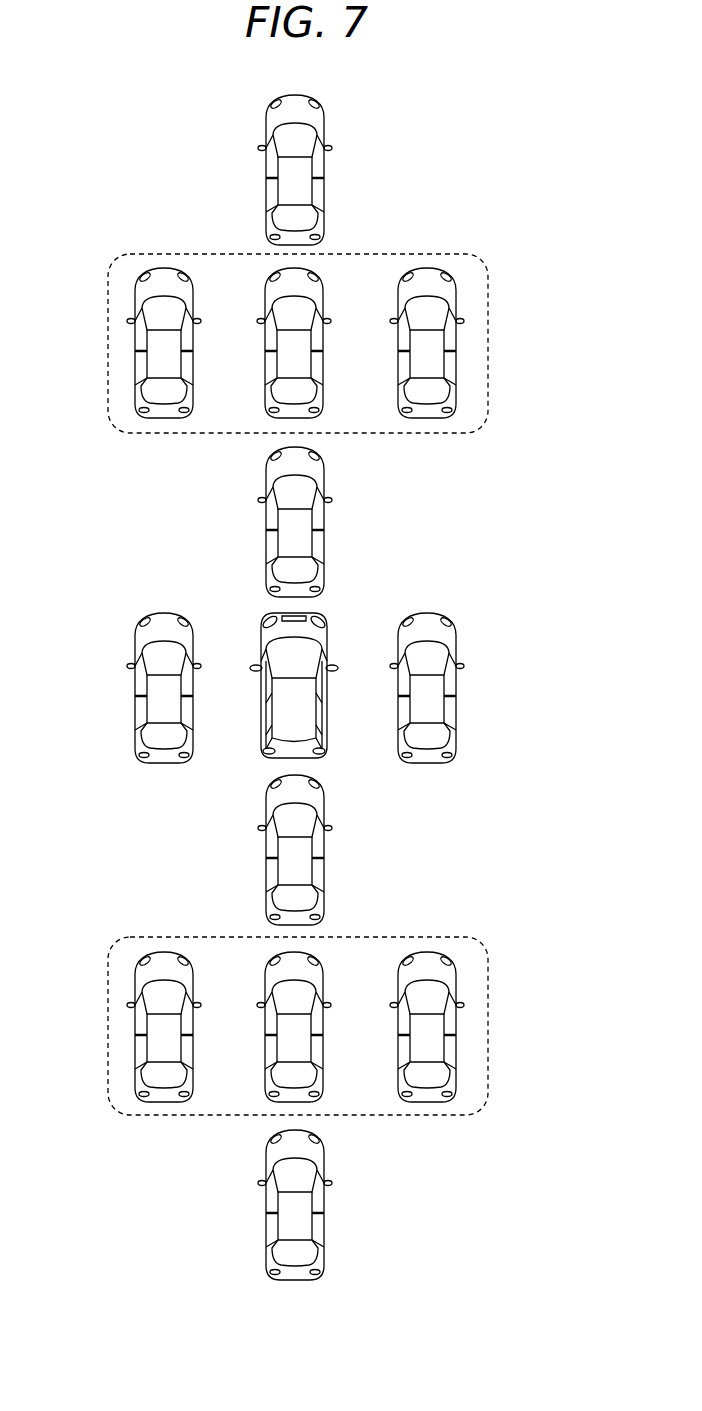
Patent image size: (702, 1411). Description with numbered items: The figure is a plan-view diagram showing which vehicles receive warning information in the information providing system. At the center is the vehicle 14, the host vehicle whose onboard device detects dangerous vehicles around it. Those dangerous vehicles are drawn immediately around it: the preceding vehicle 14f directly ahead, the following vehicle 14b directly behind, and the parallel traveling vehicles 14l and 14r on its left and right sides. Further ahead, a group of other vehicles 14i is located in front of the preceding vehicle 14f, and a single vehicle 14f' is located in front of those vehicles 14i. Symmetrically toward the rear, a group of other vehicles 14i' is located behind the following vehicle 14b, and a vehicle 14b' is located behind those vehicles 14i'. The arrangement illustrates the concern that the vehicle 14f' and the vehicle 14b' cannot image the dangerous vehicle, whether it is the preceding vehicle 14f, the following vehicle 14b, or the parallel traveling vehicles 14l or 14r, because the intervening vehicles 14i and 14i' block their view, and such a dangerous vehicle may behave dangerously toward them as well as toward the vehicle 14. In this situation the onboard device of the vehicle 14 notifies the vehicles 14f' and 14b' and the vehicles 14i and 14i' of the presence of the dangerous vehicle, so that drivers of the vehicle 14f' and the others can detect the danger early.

The vehicle 14 is at (328, 643).
The preceding vehicle 14f is at (335, 522).
The vehicle 14f' is at (336, 170).
The following vehicle 14b is at (337, 850).
The vehicle 14b' is at (338, 1205).
The parallel traveling vehicle 14l is at (135, 641).
The parallel traveling vehicle 14r is at (457, 640).
The other vehicles 14i is at (347, 343).
The other vehicles 14i' is at (348, 1026).